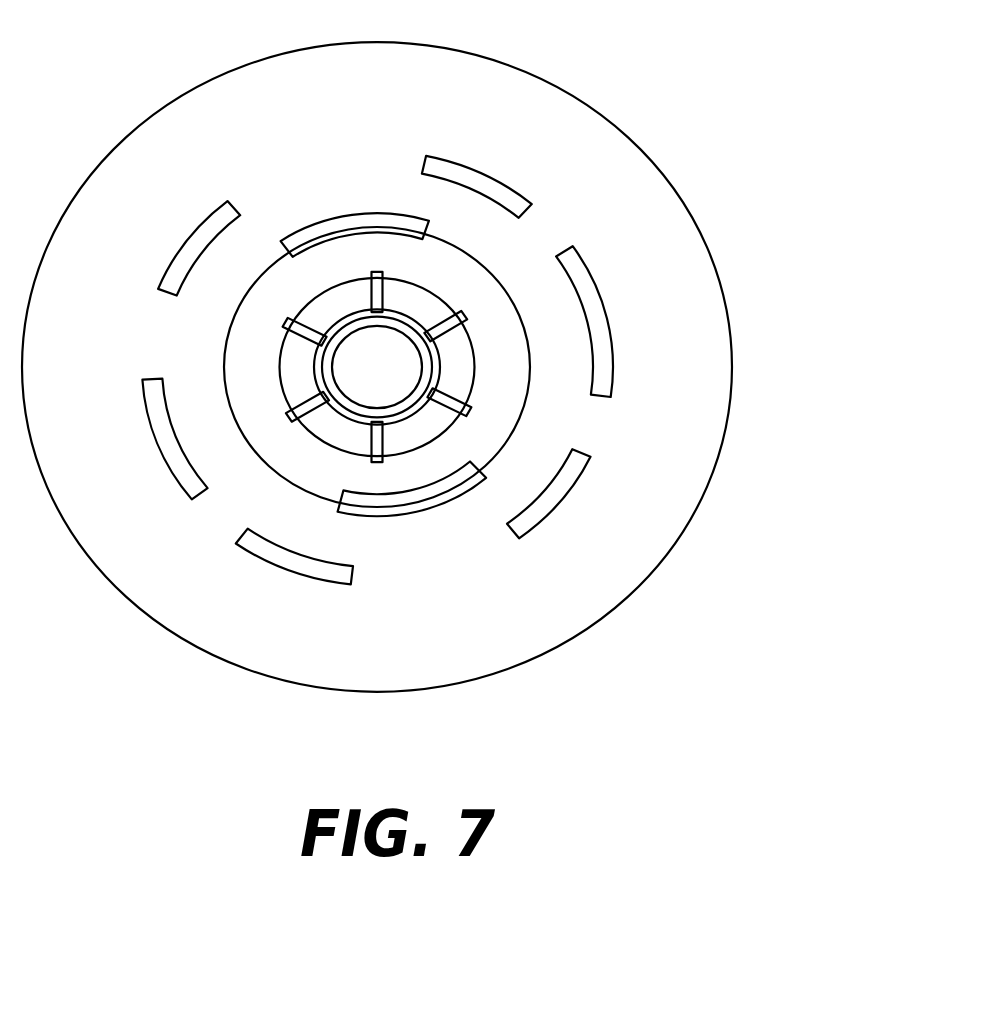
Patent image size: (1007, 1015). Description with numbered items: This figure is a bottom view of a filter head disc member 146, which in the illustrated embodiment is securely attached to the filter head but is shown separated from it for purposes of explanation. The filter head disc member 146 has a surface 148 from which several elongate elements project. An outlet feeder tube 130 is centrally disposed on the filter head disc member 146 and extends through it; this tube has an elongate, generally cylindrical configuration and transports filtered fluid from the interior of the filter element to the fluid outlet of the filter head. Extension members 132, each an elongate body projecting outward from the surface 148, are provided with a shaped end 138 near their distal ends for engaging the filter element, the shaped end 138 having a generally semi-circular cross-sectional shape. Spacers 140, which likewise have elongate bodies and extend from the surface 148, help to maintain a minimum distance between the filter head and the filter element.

The outlet feeder tube 130 is at (417, 313).
The extension member 132 is at (313, 222).
The shaped end 138 is at (320, 243).
The spacer 140 is at (460, 163).
The filter head disc member 146 is at (733, 353).
The surface 148 is at (563, 575).